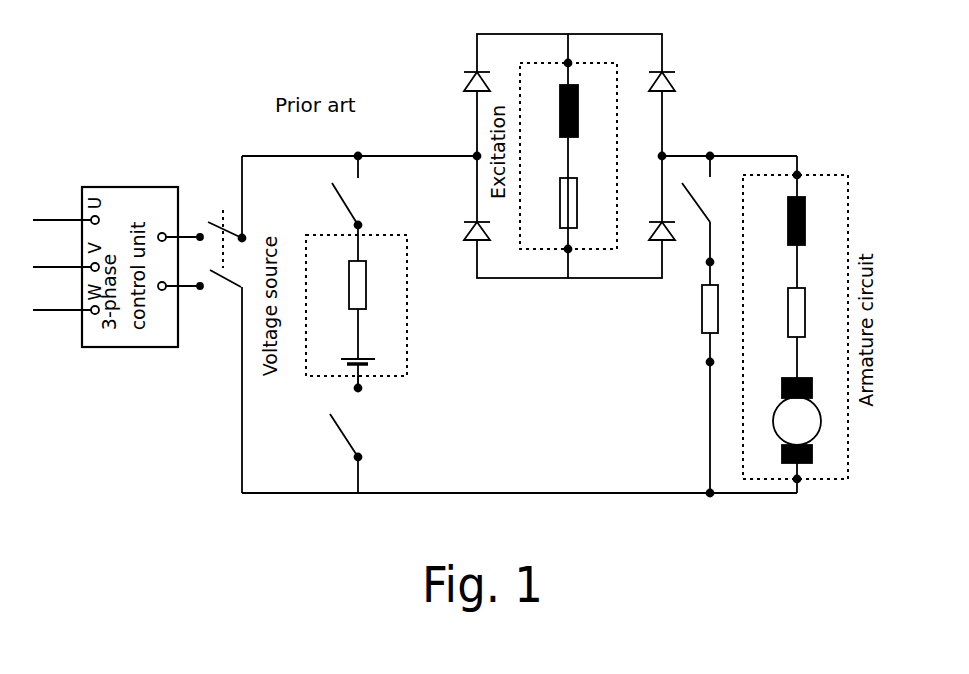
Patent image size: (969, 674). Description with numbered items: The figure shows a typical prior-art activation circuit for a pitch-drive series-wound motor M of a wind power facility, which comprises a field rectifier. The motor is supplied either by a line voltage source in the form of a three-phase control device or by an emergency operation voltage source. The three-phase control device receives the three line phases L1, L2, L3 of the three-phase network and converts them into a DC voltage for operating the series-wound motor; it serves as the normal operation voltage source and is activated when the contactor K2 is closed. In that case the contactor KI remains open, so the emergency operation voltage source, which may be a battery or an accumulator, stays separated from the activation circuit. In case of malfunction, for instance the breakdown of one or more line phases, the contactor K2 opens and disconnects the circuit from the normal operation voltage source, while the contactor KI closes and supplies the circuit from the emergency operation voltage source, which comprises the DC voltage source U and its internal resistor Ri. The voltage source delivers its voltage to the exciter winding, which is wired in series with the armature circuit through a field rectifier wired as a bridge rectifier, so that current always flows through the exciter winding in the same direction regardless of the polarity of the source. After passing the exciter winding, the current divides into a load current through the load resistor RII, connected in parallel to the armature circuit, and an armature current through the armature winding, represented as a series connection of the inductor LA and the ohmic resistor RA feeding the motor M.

The line phase L1 is at (66, 202).
The line phase L2 is at (66, 249).
The line phase L3 is at (66, 293).
The contactor K2 is at (226, 324).
The contactor KI is at (508, 323).
The internal resistor Ri is at (342, 285).
The DC voltage source U is at (343, 348).
The load resistor RII is at (690, 377).
The inductor LA is at (814, 231).
The ohmic resistor RA is at (815, 333).
The series-wound motor M is at (797, 435).